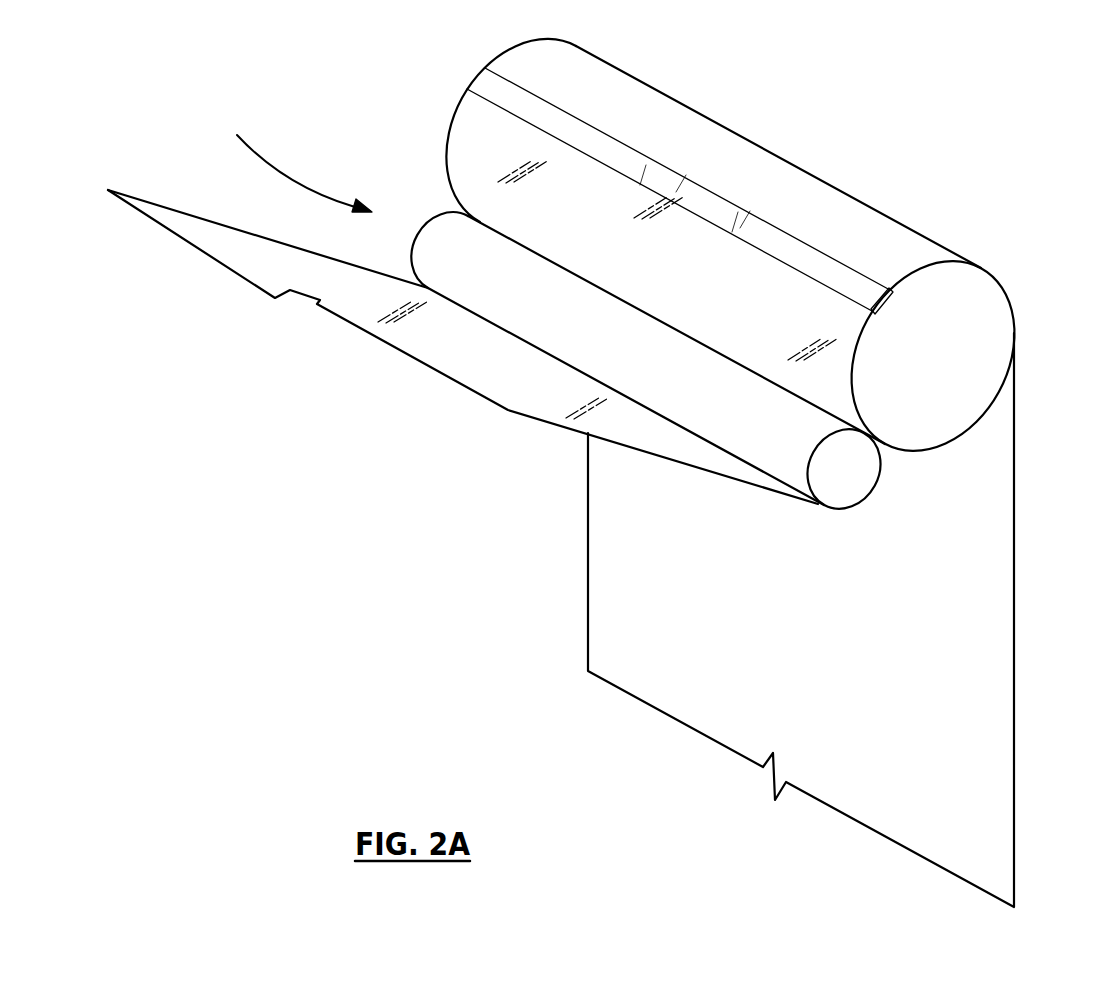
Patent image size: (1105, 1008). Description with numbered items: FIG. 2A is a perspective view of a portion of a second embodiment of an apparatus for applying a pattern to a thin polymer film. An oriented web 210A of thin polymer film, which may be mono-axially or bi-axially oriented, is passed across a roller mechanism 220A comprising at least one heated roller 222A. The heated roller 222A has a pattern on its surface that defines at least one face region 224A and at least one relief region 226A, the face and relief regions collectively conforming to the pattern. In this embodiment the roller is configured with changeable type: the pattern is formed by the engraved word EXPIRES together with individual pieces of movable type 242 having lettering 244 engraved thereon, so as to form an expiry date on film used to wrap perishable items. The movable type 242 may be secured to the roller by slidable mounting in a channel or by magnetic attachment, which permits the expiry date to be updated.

The oriented web 210A is at (518, 368).
The roller mechanism 220A is at (288, 159).
The heated roller 222A is at (980, 366).
The face region 224A is at (600, 108).
The relief region 226A is at (609, 142).
The movable type 242 is at (677, 180).
The lettering 244 is at (633, 160).